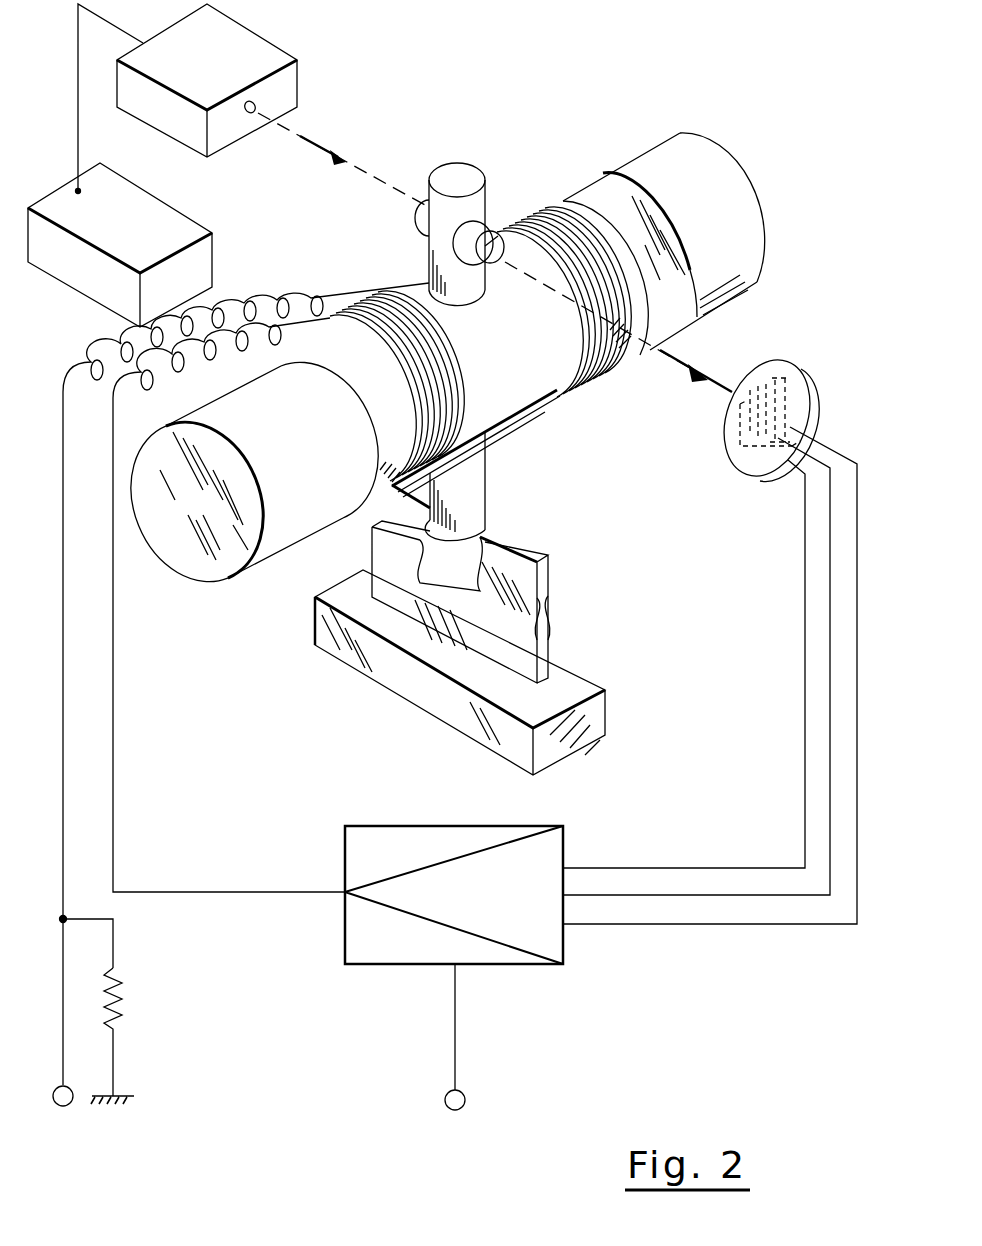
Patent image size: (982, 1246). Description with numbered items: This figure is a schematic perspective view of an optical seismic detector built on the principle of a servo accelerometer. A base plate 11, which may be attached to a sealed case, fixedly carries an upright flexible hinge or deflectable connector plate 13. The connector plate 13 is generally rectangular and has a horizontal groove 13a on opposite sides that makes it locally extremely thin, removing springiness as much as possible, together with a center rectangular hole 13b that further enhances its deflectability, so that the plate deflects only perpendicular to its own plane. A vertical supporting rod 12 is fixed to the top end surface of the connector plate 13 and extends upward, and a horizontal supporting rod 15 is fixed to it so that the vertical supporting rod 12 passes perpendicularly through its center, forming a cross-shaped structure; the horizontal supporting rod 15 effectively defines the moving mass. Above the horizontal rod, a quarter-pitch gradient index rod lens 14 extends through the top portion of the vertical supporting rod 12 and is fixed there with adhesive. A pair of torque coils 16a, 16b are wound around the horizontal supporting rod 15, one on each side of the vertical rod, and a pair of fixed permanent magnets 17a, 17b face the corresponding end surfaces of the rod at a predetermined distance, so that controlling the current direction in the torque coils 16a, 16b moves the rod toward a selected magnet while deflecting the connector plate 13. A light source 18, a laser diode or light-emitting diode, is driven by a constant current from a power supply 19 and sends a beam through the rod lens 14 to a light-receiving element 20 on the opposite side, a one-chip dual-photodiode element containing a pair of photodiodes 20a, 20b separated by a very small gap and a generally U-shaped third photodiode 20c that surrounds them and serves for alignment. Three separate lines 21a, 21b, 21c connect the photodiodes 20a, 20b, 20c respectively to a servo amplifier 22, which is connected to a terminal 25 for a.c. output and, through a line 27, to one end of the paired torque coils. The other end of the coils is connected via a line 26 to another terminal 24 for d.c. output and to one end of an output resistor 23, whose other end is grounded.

The base plate 11 is at (605, 702).
The vertical supporting rod 12 is at (452, 172).
The connector plate 13 is at (537, 575).
The horizontal groove 13a is at (542, 612).
The center rectangular hole 13b is at (462, 572).
The gradient index rod lens 14 is at (490, 232).
The horizontal supporting rod 15 is at (537, 374).
The torque coil 16a is at (366, 308).
The torque coil 16b is at (535, 214).
The permanent magnet 17a is at (175, 525).
The permanent magnet 17b is at (735, 172).
The light source 18 is at (270, 42).
The power supply 19 is at (195, 216).
The light-receiving element 20 is at (814, 368).
The photodiode 20a is at (745, 380).
The photodiode 20b is at (766, 362).
The third photodiode 20c is at (740, 410).
The line 21a is at (805, 562).
The line 21b is at (830, 603).
The line 21c is at (857, 640).
The servo amplifier 22 is at (418, 826).
The output resistor 23 is at (118, 1000).
The terminal 24 is at (58, 1108).
The terminal 25 is at (446, 1110).
The line 26 is at (63, 676).
The line 27 is at (113, 706).